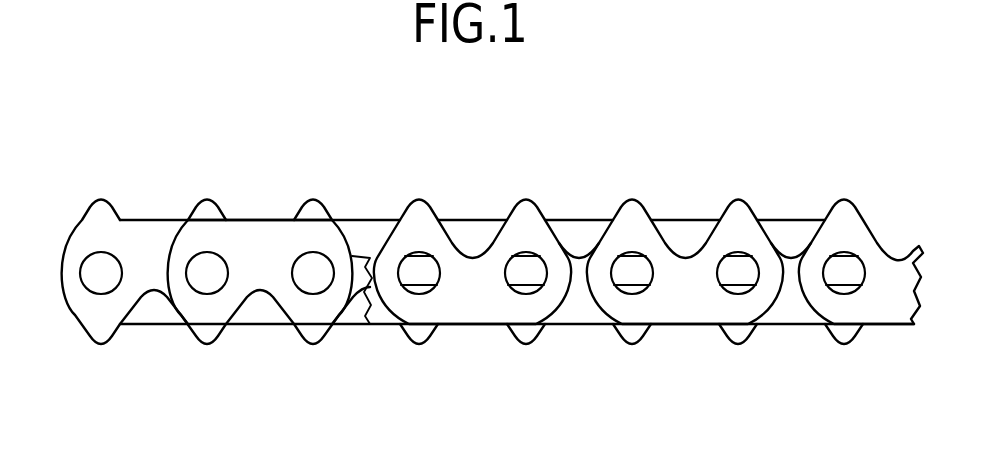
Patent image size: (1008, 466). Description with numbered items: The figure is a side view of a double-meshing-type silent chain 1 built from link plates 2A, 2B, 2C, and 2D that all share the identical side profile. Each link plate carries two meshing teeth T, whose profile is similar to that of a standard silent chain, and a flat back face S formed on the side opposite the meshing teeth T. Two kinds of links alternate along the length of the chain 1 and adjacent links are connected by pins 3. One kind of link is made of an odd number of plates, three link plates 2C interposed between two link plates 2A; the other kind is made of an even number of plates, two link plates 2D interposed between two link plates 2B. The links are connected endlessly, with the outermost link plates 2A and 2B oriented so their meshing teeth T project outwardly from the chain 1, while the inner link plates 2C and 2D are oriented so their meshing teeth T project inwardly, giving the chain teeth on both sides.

The double-meshing-type silent chain 1 is at (670, 190).
The link plate 2A is at (522, 207).
The link plate 2B is at (310, 200).
The link plate 2C is at (252, 220).
The link plate 2D is at (360, 220).
The pin 3 is at (743, 267).
The meshing teeth T is at (630, 196).
The flat back face S is at (460, 218).